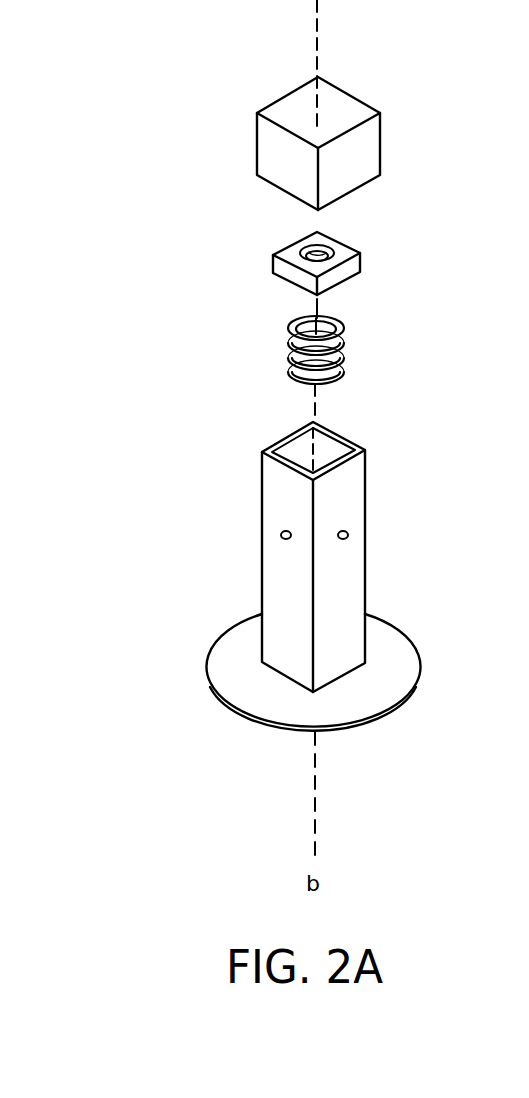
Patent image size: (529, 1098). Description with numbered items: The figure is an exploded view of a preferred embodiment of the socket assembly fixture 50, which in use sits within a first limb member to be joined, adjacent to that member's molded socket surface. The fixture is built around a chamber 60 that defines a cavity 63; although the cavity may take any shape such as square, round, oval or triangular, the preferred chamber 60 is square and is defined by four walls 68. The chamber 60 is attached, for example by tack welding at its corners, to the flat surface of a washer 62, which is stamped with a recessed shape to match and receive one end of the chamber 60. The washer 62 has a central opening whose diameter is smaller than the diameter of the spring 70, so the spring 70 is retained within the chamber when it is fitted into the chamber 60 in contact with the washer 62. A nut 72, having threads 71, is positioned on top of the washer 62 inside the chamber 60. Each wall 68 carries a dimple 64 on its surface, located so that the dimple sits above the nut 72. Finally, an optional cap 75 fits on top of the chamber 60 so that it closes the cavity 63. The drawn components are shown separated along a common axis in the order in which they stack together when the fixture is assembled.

The socket assembly fixture 50 is at (430, 101).
The cap 75 is at (292, 105).
The threads 71 is at (302, 247).
The nut 72 is at (283, 268).
The spring 70 is at (297, 340).
The chamber 60 is at (118, 420).
The cavity 63 is at (300, 448).
The walls 68 is at (282, 476).
The dimple 64 is at (280, 537).
The washer 62 is at (257, 683).